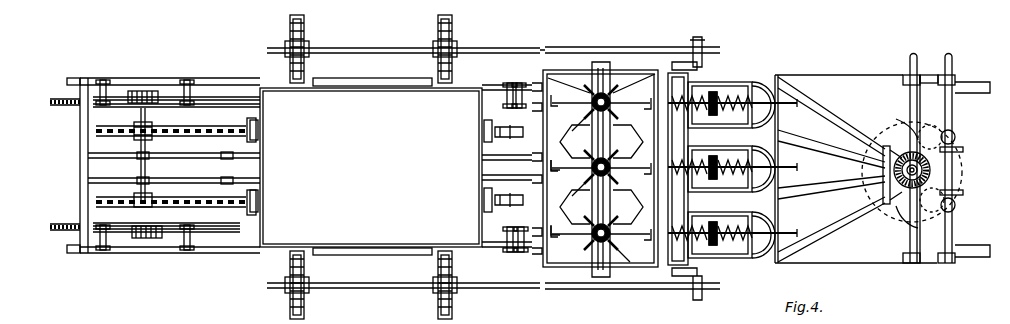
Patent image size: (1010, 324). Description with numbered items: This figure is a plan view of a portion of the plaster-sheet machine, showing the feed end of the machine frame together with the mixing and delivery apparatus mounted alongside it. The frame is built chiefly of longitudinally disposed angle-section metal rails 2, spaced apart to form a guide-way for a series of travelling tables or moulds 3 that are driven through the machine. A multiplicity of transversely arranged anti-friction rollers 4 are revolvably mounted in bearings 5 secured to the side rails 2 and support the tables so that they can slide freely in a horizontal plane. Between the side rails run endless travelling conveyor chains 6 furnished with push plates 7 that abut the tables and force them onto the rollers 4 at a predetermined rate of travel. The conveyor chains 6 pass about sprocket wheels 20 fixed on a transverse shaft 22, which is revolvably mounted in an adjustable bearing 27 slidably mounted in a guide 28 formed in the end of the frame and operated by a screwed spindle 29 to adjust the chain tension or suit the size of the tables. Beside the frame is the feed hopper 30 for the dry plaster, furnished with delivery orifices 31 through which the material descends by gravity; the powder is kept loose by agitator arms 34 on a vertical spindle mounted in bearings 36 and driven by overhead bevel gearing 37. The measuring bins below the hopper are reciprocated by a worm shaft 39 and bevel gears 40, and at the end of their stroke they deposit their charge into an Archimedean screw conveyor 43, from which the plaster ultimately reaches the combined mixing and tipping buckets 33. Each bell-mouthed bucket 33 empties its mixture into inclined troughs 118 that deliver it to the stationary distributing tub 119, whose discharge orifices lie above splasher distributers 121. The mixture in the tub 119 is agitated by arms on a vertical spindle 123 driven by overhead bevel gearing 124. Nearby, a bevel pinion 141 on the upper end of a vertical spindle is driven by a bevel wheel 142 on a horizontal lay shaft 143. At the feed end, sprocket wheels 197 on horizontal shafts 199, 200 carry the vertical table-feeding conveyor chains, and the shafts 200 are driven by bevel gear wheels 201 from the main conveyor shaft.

The angle-section metal rails 2 is at (236, 80).
The travelling tables or moulds 3 is at (371, 166).
The anti-friction rollers 4 is at (190, 85).
The bearings 5 is at (106, 80).
The endless travelling conveyor chains 6 is at (232, 130).
The push plates 7 is at (258, 130).
The sprocket wheels 20 is at (128, 134).
The transverse shaft 22 is at (145, 141).
The adjustable bearing 27 is at (150, 90).
The guide 28 is at (218, 238).
The screwed spindle 29 is at (65, 106).
The feed hopper 30 is at (620, 104).
The delivery orifices 31 is at (613, 85).
The combined mixing and tipping bucket 33 is at (780, 108).
The agitator arms 34 is at (584, 116).
The bearings 36 is at (556, 160).
The overhead bevel gearing 37 is at (612, 170).
The worm shaft 39 is at (690, 100).
The bevel gears 40 is at (718, 98).
The Archimedean screw conveyor 43 is at (777, 80).
The inclined troughs 118 is at (831, 169).
The stationary distributing tub 119 is at (883, 170).
The splasher distributers 121 is at (903, 120).
The vertical spindle 123 is at (932, 168).
The overhead bevel gearing 124 is at (880, 150).
The bevel pinion 141 is at (957, 134).
The bevel wheel 142 is at (963, 149).
The horizontal lay shaft 143 is at (953, 233).
The sprocket wheels 197 is at (304, 24).
The horizontal shaft 199 is at (365, 46).
The horizontal shaft 200 is at (547, 46).
The bevel gear wheels 201 is at (705, 38).